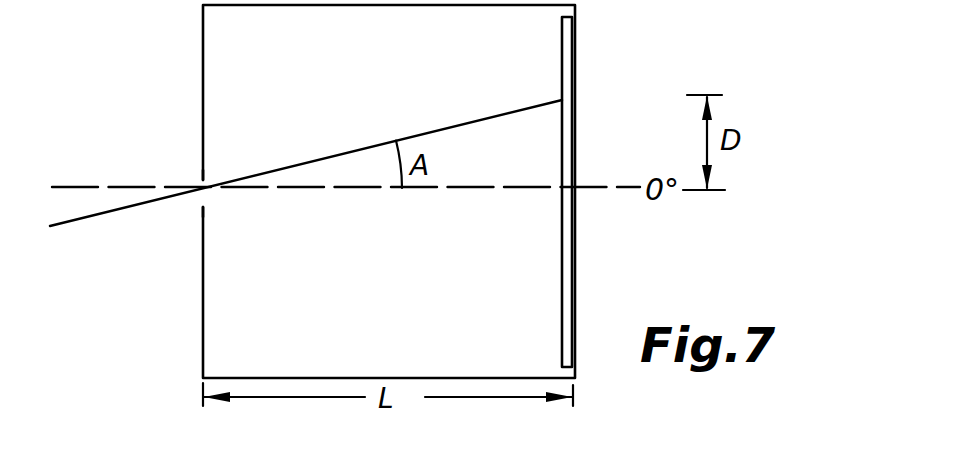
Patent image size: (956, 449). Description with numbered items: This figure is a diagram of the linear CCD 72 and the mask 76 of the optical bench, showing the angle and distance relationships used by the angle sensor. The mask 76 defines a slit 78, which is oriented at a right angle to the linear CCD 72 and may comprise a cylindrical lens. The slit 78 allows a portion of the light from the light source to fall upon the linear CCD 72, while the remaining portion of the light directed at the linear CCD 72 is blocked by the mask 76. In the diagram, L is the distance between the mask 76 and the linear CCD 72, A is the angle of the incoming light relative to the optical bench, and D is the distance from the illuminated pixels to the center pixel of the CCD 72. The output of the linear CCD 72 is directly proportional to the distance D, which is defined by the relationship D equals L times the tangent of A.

The linear CCD 72 is at (560, 59).
The mask 76 is at (204, 47).
The slit 78 is at (203, 181).